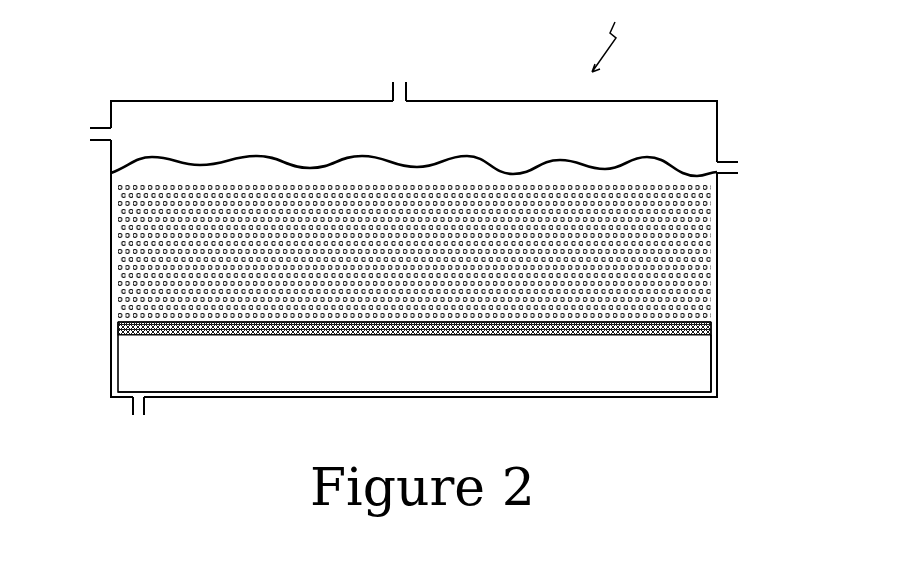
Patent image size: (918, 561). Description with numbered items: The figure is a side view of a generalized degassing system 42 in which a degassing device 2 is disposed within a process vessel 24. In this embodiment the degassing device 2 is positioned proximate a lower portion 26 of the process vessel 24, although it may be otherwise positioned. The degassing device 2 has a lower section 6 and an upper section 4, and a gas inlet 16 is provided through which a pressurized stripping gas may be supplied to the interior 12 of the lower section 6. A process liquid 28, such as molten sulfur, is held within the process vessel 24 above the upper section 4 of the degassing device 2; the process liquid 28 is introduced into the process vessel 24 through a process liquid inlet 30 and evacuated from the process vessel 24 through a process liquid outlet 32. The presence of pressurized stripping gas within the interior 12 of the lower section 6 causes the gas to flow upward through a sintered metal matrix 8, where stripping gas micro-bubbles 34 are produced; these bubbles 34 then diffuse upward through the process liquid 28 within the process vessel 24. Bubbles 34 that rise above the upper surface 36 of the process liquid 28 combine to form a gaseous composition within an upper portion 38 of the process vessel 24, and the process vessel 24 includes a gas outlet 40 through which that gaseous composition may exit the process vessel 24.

The degassing device 2 is at (118, 352).
The upper section 4 is at (712, 328).
The lower section 6 is at (712, 385).
The sintered metal matrix 8 is at (118, 324).
The interior 12 is at (685, 366).
The gas inlet 16 is at (145, 398).
The process vessel 24 is at (111, 211).
The lower portion 26 is at (111, 362).
The process liquid 28 is at (220, 164).
The process liquid inlet 30 is at (110, 128).
The process liquid outlet 32 is at (718, 162).
The stripping gas micro-bubbles 34 is at (705, 222).
The upper surface 36 is at (645, 158).
The upper portion 38 is at (111, 158).
The gas outlet 40 is at (392, 100).
The degassing system 42 is at (614, 36).